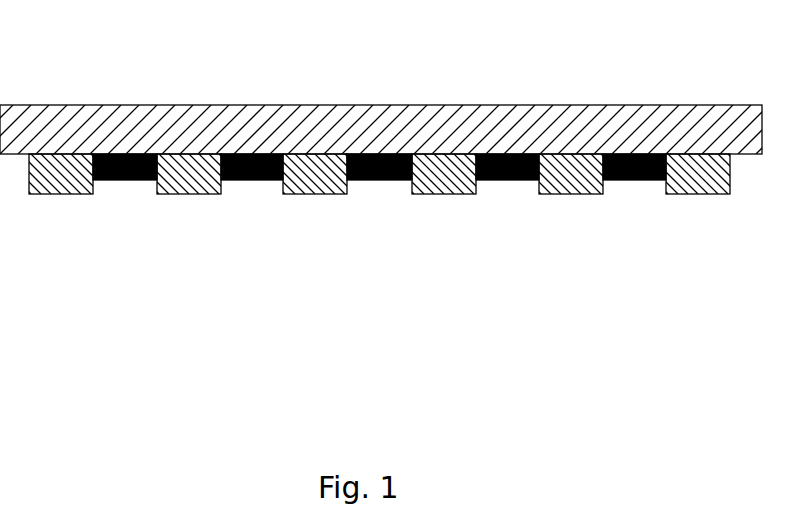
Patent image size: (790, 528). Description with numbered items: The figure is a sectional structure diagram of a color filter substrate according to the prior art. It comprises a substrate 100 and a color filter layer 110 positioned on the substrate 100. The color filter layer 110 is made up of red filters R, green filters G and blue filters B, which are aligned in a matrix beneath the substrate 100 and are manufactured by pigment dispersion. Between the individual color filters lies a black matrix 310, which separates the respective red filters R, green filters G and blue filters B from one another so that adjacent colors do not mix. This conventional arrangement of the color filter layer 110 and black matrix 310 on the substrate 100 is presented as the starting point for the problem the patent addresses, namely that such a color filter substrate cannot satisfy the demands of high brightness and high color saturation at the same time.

The substrate 100 is at (680, 120).
The color filter layer 110 is at (384, 237).
The black matrix 310 is at (635, 178).
The red filters R is at (55, 178).
The green filters G is at (183, 178).
The blue filters B is at (315, 212).